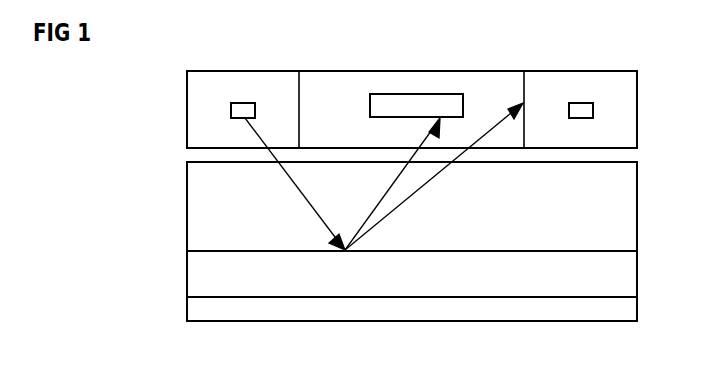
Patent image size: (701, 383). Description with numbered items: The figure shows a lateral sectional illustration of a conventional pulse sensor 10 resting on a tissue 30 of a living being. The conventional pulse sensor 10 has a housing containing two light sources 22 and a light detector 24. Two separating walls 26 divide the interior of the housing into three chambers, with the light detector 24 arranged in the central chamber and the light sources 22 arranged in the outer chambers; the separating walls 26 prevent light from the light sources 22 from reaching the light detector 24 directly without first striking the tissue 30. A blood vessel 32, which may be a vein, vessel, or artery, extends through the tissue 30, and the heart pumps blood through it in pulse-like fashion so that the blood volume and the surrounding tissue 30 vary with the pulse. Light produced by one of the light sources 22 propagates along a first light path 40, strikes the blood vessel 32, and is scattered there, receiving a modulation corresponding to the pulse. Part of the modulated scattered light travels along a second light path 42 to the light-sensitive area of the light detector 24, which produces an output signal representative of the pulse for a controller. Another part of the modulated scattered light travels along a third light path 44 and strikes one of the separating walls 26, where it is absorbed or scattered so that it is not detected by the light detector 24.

The conventional pulse sensor 10 is at (166, 102).
The light source 22 is at (247, 101).
The light detector 24 is at (413, 96).
The separating wall 26 is at (299, 97).
The tissue 30 is at (166, 197).
The blood vessel 32 is at (238, 290).
The first light path 40 is at (290, 189).
The second light path 42 is at (380, 193).
The third light path 44 is at (428, 182).